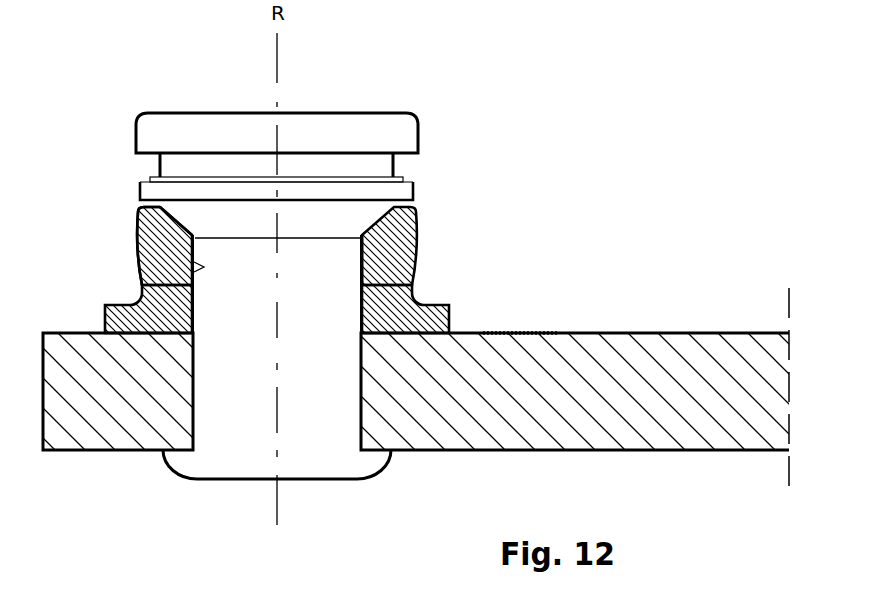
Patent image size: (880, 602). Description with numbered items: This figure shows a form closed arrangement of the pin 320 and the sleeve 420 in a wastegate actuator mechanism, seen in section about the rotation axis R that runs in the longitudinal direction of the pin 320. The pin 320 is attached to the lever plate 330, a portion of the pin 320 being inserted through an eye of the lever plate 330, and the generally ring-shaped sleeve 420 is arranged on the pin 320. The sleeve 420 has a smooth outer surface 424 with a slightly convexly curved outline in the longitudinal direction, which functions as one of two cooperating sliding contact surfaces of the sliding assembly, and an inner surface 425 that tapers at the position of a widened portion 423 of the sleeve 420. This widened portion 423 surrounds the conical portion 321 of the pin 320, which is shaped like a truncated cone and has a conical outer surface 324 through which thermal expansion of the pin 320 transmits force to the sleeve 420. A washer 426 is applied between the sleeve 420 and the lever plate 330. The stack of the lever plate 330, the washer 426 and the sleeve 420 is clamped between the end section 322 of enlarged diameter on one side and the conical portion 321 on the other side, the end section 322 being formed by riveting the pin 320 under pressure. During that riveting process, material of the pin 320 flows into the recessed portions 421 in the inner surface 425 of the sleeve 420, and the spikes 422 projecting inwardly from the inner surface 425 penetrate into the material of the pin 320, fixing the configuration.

The pin 320 is at (337, 130).
The conical portion 321 is at (373, 213).
The end section 322 is at (188, 460).
The conical outer surface 324 is at (368, 260).
The lever plate 330 is at (598, 345).
The sleeve 420 is at (153, 245).
The recessed portions 421 is at (368, 238).
The spikes 422 is at (182, 217).
The widened portion 423 is at (160, 223).
The outer surface 424 is at (138, 266).
The inner surface 425 is at (162, 177).
The washer 426 is at (428, 322).